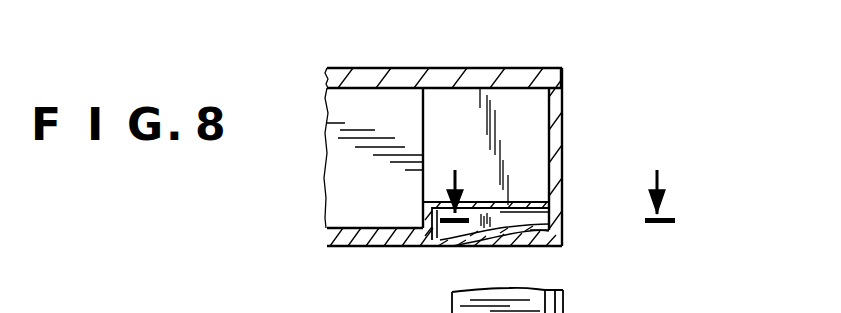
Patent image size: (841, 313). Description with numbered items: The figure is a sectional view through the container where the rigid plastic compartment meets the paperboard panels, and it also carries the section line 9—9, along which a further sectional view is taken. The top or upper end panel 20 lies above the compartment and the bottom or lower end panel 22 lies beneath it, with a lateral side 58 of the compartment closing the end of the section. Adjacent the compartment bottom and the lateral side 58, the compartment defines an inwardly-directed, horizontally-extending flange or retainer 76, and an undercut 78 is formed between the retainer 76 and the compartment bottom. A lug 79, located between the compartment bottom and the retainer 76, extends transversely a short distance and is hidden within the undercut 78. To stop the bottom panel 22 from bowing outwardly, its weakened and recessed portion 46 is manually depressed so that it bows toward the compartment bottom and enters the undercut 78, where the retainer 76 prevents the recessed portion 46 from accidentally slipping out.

The top or upper end panel 20 is at (430, 72).
The bottom or lower end panel 22 is at (377, 246).
The lateral side 58 is at (555, 138).
The lug 79 is at (548, 222).
The undercut 78 is at (550, 231).
The retainer 76 is at (508, 248).
The weakened and recessed portion 46 is at (548, 250).
The section line 9— 9 is at (559, 176).